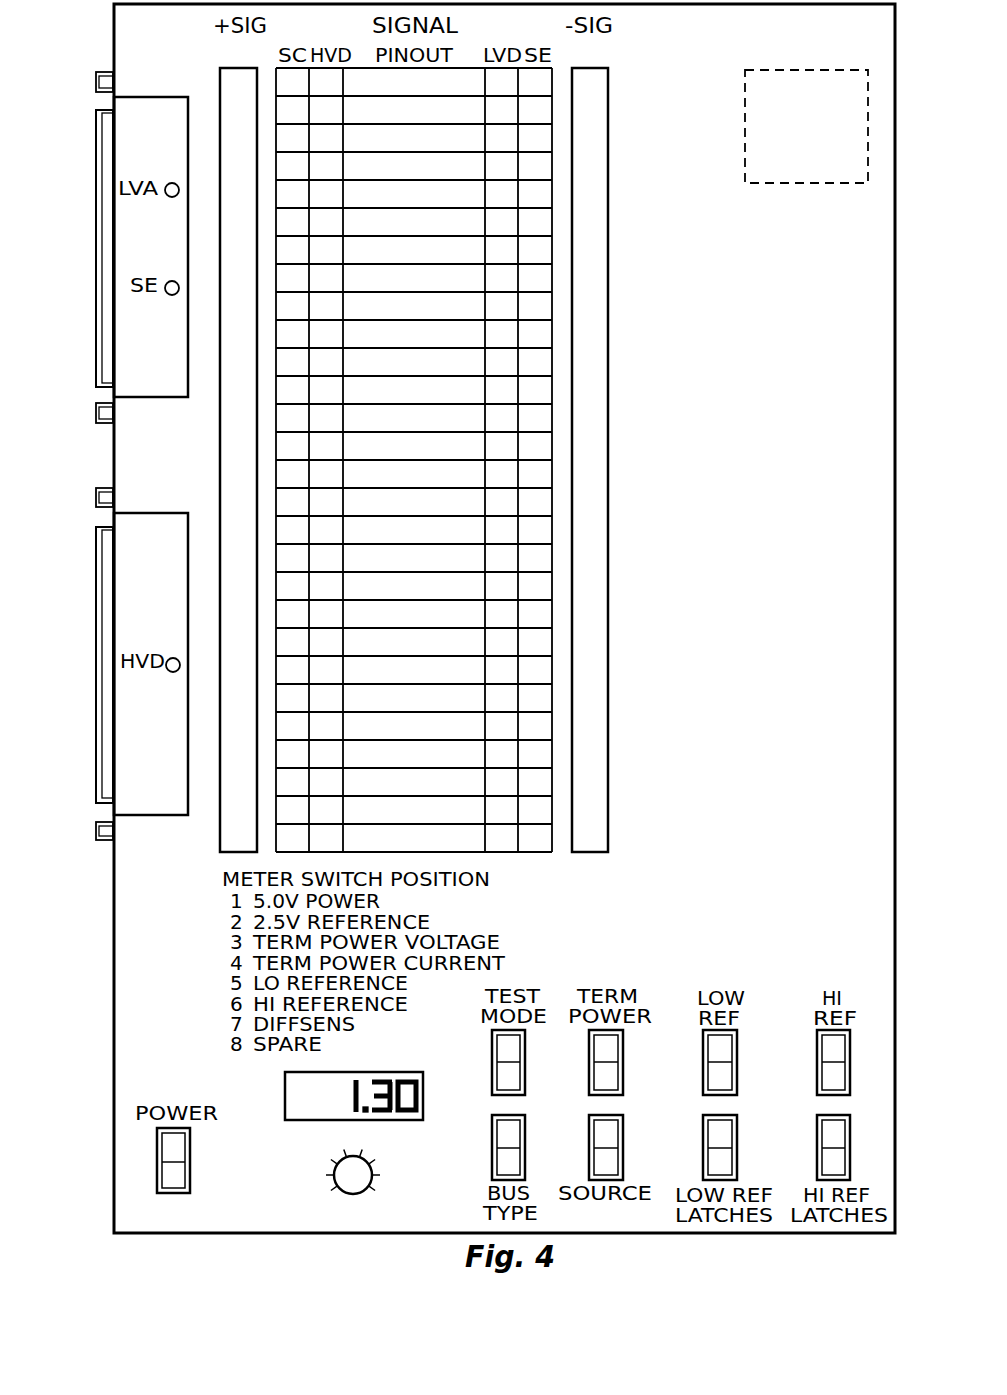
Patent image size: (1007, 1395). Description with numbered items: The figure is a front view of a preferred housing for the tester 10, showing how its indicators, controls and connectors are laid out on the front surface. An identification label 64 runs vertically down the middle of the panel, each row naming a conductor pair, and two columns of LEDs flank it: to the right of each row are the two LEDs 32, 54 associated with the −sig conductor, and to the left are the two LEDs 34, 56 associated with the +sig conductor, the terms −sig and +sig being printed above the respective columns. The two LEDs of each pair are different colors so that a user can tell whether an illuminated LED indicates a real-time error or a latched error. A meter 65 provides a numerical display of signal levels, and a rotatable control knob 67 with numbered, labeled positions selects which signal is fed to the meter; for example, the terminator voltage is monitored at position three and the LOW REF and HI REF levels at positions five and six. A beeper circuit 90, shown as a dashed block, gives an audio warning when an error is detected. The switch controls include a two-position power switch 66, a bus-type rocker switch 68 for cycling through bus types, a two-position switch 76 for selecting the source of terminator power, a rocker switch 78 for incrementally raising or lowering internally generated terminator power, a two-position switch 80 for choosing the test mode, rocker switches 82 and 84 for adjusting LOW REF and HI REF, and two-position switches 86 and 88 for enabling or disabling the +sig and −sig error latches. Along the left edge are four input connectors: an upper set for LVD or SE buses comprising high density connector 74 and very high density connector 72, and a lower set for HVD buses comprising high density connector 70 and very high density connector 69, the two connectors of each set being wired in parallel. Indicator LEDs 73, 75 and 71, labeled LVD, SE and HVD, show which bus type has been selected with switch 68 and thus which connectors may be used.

The tester 10 is at (738, 518).
The LED 32 is at (630, 460).
The LED 54 is at (608, 92).
The LED 34 is at (197, 455).
The LED 56 is at (220, 78).
The identification label 64 is at (532, 853).
The meter 65 is at (386, 1072).
The power switch 66 is at (168, 1193).
The control knob 67 is at (346, 1195).
The bus-type switch 68 is at (492, 1163).
The very high density connector 69 is at (97, 702).
The high density connector 70 is at (97, 739).
The LED 71 is at (171, 673).
The very high density connector 72 is at (97, 349).
The LED 73 is at (170, 198).
The high density connector 74 is at (97, 312).
The LED 75 is at (170, 296).
The two-position switch 76 is at (589, 1163).
The switch 78 is at (589, 1048).
The two-position switch 80 is at (492, 1041).
The rocker switch 82 is at (703, 1050).
The rocker switch 84 is at (817, 1050).
The two-position switch 86 is at (703, 1165).
The two-position switch 88 is at (817, 1165).
The beeper circuit 90 is at (815, 70).